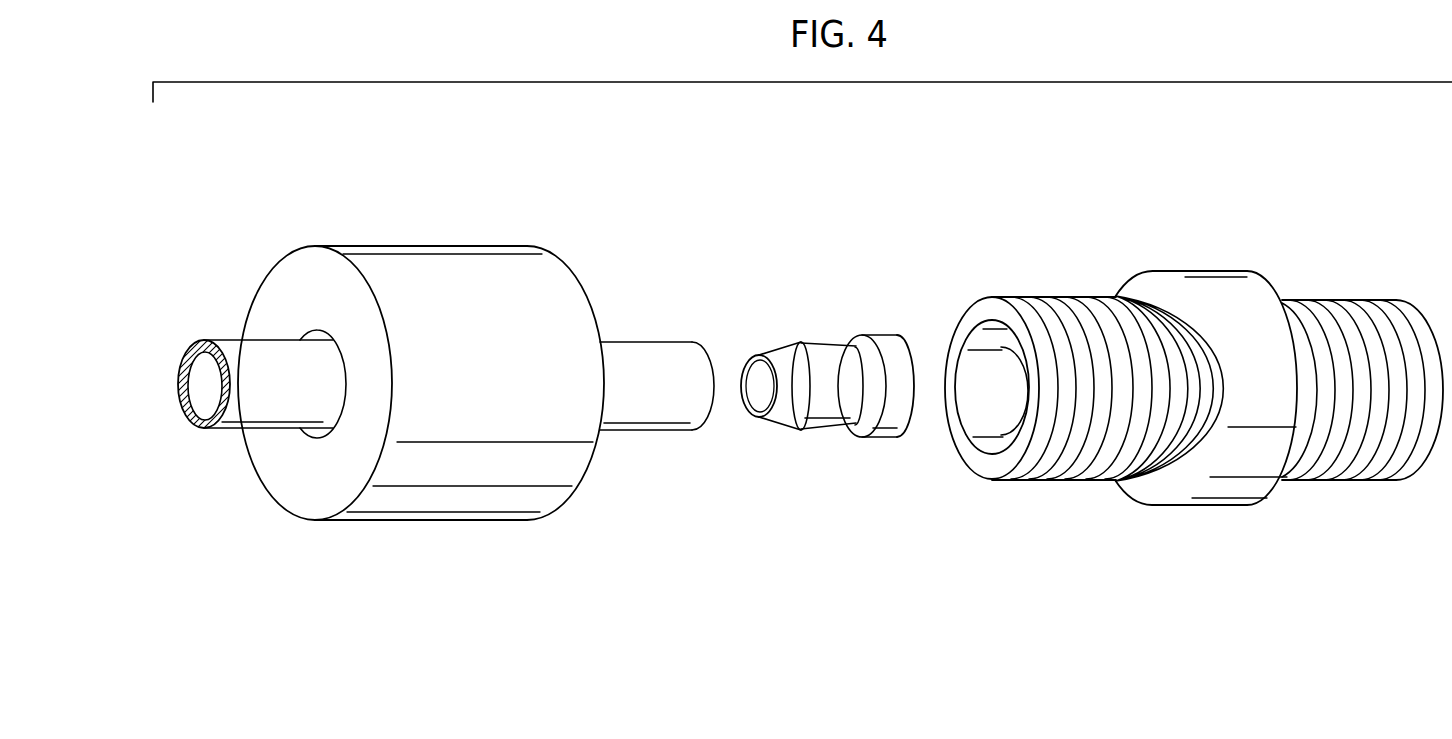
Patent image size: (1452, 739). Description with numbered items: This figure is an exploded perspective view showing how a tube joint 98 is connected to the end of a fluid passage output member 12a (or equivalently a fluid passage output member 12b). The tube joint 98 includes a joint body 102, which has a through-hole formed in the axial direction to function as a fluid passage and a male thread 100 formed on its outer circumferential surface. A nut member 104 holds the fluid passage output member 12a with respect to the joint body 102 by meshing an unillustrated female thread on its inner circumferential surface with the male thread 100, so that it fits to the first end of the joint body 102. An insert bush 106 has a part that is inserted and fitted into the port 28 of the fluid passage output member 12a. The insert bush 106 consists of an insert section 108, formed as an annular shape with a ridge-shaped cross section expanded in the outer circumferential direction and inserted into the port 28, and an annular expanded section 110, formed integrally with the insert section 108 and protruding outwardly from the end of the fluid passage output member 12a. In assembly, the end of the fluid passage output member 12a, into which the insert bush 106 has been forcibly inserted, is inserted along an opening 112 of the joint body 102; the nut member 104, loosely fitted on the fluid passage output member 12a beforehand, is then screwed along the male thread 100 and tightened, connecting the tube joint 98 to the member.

The tube joint 98 is at (1194, 356).
The male thread 100 is at (1084, 429).
The joint body 102 is at (1210, 490).
The nut member 104 is at (505, 492).
The insert bush 106 is at (827, 383).
The insert section 108 is at (817, 420).
The annular expanded section 110 is at (890, 420).
The opening 112 is at (1003, 437).
The fluid passage output member 12a is at (665, 379).
The fluid passage output member 12b is at (657, 431).
The port 28 is at (708, 412).